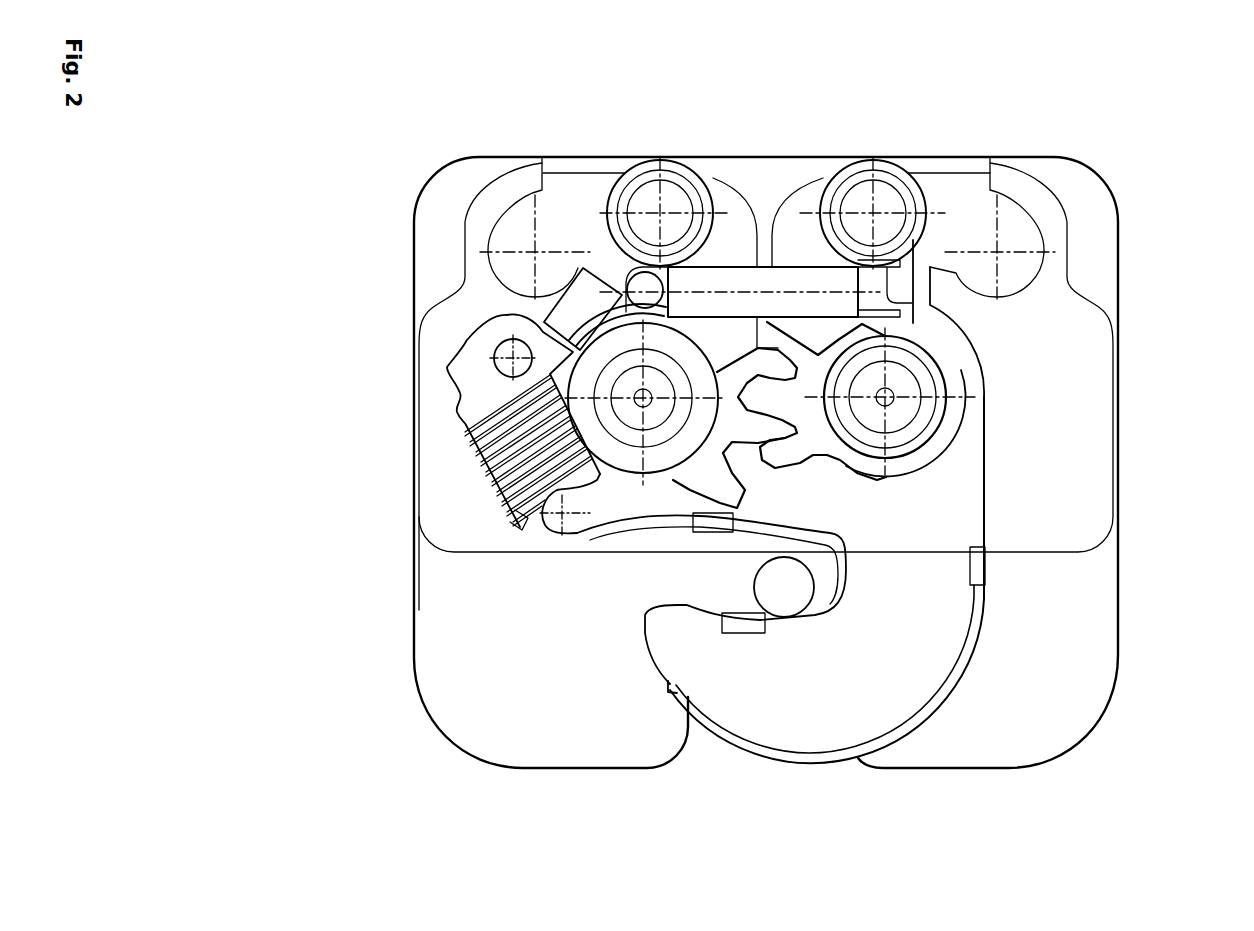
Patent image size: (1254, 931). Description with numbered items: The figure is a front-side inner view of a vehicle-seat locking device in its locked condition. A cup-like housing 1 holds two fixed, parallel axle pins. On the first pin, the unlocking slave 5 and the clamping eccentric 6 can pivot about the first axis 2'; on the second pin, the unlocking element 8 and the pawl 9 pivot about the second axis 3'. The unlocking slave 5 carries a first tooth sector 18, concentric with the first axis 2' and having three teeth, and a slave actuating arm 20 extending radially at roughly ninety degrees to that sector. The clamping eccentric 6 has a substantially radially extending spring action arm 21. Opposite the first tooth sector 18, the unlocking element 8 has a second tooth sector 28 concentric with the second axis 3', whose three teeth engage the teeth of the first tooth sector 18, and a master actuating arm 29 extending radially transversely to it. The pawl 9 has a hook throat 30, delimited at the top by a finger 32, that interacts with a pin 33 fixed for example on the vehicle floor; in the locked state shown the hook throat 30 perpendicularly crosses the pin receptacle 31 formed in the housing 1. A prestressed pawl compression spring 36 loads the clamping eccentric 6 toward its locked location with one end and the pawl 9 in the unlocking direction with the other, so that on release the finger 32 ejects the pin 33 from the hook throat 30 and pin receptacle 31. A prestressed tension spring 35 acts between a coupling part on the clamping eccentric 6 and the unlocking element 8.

The housing 1 is at (1118, 248).
The first axis 2' is at (632, 580).
The second axis 3' is at (1015, 410).
The unlocking slave 5 is at (727, 170).
The clamping eccentric 6 is at (481, 323).
The unlocking element 8 is at (887, 150).
The pawl 9 is at (970, 673).
The first tooth sector 18 is at (762, 488).
The slave actuating arm 20 is at (620, 262).
The spring action arm 21 is at (452, 366).
The second tooth sector 28 is at (825, 468).
The master actuating arm 29 is at (921, 257).
The hook throat 30 is at (727, 583).
The pin receptacle 31 is at (692, 728).
The finger 32 is at (560, 513).
The pin 33 is at (785, 600).
The tension spring 35 is at (778, 275).
The pawl compression spring 36 is at (505, 468).